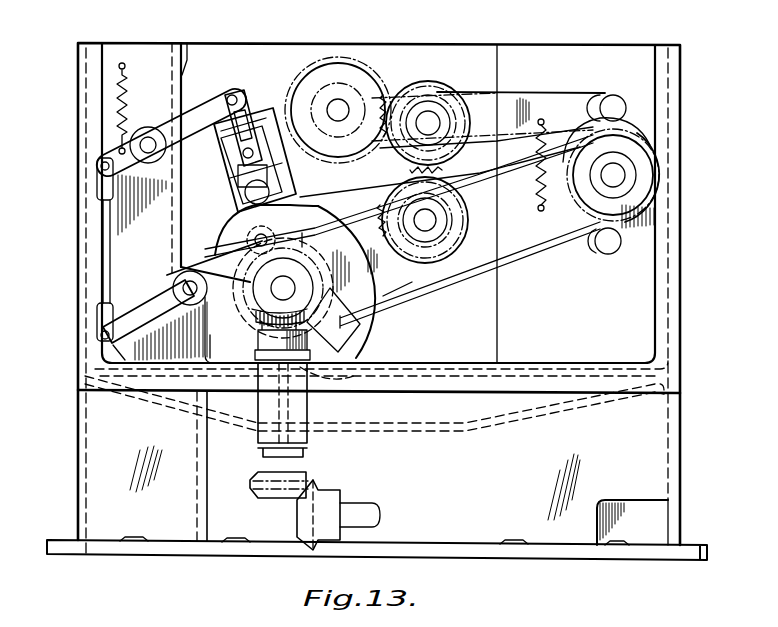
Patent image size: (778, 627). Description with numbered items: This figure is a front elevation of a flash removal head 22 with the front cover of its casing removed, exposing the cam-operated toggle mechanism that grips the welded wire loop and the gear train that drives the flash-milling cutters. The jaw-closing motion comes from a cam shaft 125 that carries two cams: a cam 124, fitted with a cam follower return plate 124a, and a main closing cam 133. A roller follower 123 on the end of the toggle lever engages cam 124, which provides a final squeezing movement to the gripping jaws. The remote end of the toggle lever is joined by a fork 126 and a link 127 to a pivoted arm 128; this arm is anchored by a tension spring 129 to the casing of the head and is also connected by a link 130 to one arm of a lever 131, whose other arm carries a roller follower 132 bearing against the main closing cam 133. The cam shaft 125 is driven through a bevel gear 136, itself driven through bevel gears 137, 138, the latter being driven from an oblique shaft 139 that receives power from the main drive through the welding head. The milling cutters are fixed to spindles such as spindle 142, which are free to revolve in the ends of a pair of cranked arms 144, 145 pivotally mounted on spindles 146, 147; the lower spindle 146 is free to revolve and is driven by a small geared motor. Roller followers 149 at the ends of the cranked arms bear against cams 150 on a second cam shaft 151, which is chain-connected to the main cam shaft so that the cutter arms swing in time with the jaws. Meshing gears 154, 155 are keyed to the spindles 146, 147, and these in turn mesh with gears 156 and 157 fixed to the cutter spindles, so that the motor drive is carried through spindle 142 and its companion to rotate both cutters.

The flash removal head 22 is at (690, 269).
The roller follower 123 is at (250, 194).
The cam 124 is at (229, 230).
The cam follower return plate 124a is at (362, 348).
The cam shaft 125 is at (257, 314).
The fork 126 is at (233, 170).
The link 127 is at (256, 106).
The pivoted arm 128 is at (197, 110).
The tension spring 129 is at (128, 91).
The link 130 is at (104, 264).
The lever 131 is at (127, 310).
The roller follower 132 is at (270, 232).
The main closing cam 133 is at (282, 289).
The bevel gear 136 is at (256, 334).
The bevel gear 137 is at (262, 492).
The bevel gear 138 is at (296, 519).
The oblique shaft 139 is at (363, 505).
The spindle 142 is at (341, 108).
The cranked arm 144 is at (537, 97).
The cranked arm 145 is at (562, 248).
The spindle 146 is at (430, 120).
The spindle 147 is at (430, 228).
The roller follower 149 is at (614, 98).
The cam 150 is at (607, 130).
The cam shaft 151 is at (603, 174).
The gear 154 is at (460, 87).
The gear 155 is at (470, 237).
The gear 156 is at (312, 72).
The gear 157 is at (411, 171).